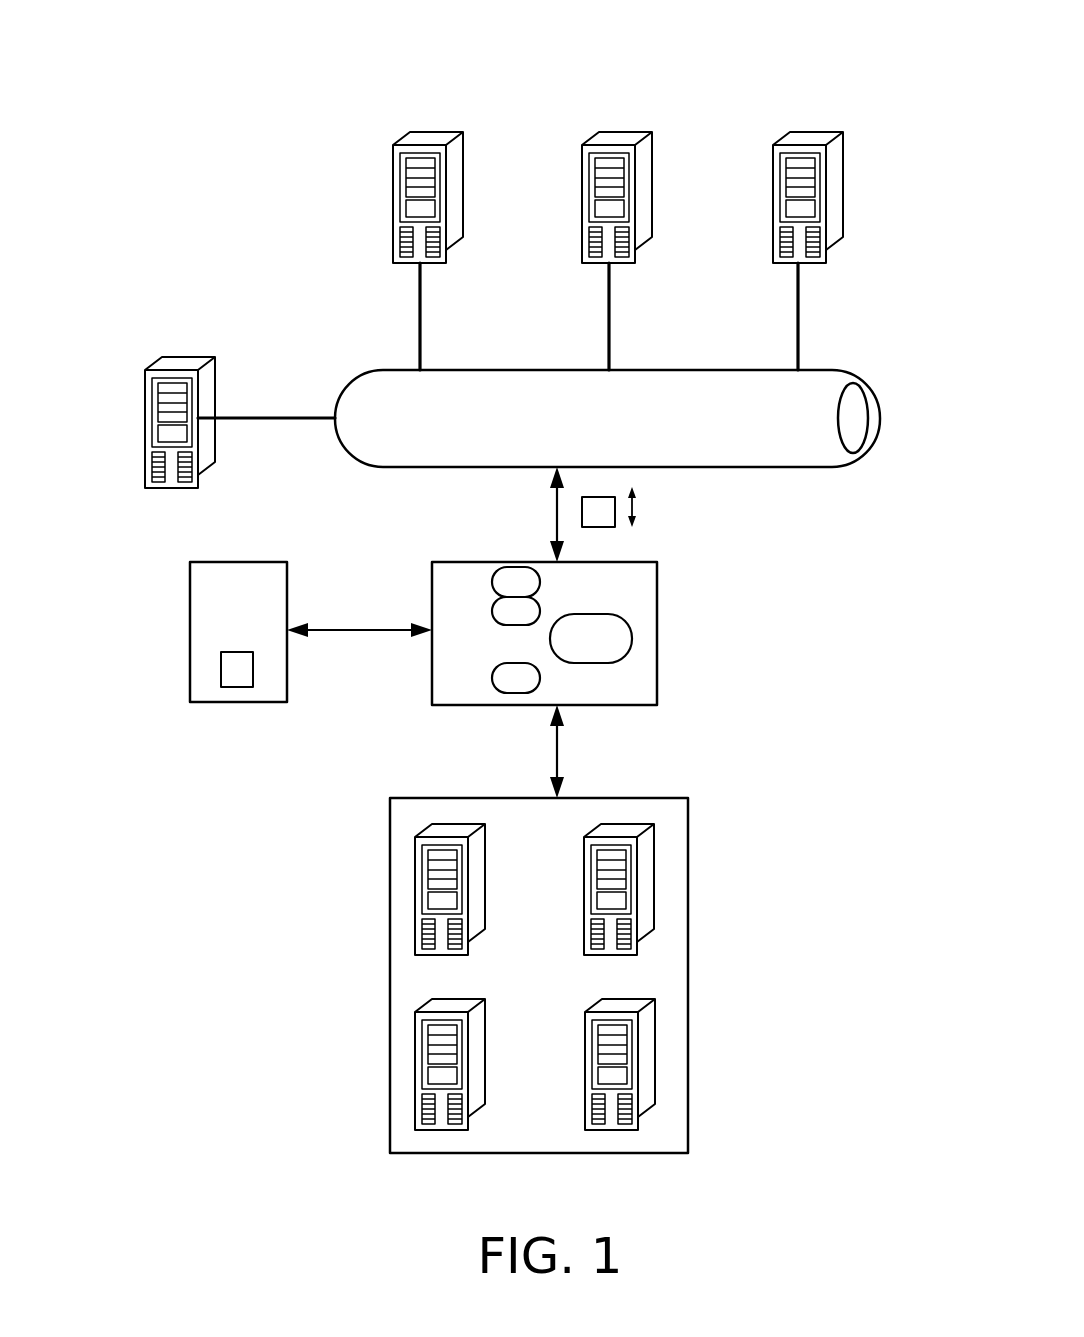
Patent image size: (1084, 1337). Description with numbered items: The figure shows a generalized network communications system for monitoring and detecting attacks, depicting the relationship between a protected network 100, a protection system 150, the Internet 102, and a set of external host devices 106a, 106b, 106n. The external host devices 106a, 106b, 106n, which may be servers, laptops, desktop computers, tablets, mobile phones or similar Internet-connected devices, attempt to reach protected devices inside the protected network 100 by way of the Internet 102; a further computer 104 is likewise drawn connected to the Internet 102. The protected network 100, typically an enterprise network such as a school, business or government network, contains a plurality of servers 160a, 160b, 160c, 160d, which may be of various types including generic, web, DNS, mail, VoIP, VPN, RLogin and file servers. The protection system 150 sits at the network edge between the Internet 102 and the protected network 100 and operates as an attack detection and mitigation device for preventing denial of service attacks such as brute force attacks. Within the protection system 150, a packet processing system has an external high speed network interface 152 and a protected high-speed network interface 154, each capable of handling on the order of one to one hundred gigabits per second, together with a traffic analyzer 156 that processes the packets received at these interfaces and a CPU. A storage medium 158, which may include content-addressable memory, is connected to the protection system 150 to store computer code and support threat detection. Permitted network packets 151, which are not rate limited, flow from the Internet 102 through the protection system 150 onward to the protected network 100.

The protected network 100 is at (674, 792).
The Internet 102 is at (843, 361).
The client computer 104 is at (188, 357).
The external host device 106a is at (438, 132).
The external host device 106b is at (626, 132).
The external host device 106n is at (816, 132).
The protection system 150 is at (634, 559).
The permitted network packets 151 is at (597, 497).
The external high speed network interface 152 is at (521, 567).
The protected high-speed network interface 154 is at (510, 694).
The traffic analyzer 156 is at (492, 607).
The storage medium 158 is at (190, 598).
The server 160a is at (415, 886).
The server 160b is at (415, 1069).
The server 160c is at (655, 876).
The server 160d is at (655, 1054).